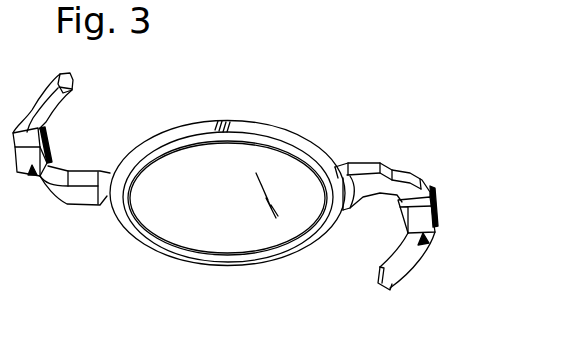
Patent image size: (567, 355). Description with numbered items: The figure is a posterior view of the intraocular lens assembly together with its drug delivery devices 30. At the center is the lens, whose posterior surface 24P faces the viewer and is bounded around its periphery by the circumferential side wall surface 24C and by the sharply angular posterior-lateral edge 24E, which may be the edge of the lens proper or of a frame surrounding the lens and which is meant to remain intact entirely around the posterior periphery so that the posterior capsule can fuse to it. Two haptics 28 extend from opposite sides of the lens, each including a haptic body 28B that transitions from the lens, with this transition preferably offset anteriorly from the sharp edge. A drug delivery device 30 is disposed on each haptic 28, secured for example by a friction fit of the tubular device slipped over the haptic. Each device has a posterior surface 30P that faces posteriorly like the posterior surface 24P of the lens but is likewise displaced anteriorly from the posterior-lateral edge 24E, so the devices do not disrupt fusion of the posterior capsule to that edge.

The circumferential side wall surface 24C is at (207, 122).
The posterior-lateral edge 24E is at (273, 136).
The posterior surface 24P is at (238, 199).
The haptic 28 is at (73, 84).
The haptic body 28B is at (362, 160).
The drug delivery device 30 is at (50, 150).
The posterior surface 30P is at (32, 174).